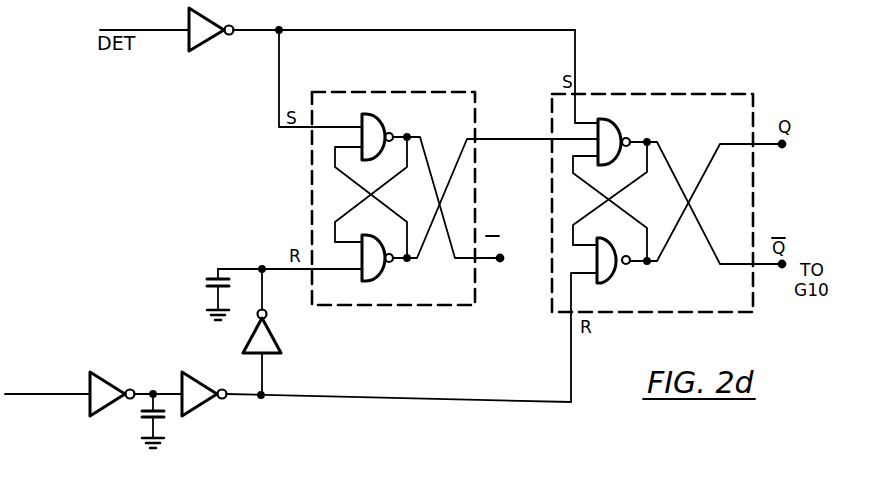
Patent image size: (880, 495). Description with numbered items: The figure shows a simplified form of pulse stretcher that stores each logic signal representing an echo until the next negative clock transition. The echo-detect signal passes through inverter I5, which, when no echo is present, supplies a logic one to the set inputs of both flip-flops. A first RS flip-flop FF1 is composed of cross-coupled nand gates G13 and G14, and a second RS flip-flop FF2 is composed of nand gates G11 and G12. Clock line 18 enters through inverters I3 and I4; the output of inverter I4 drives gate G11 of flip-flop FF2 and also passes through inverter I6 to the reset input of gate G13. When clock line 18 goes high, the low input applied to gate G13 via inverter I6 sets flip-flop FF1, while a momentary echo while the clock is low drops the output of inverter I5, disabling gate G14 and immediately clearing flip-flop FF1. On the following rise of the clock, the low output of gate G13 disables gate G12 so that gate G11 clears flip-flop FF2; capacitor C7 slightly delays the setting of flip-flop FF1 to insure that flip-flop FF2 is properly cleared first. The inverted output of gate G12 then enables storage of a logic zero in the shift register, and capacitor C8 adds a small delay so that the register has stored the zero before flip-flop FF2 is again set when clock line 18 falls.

The clock line 18 is at (41, 393).
The inverter I3 is at (98, 378).
The inverter I4 is at (190, 378).
The inverter I5 is at (196, 42).
The inverter I6 is at (271, 339).
The capacitor C7 is at (218, 293).
The capacitor C8 is at (146, 421).
The first RS flip-flop FF1 is at (383, 92).
The second RS flip-flop FF2 is at (668, 94).
The nand gate G11 is at (603, 285).
The nand gate G12 is at (628, 136).
The nand gate G13 is at (374, 268).
The nand gate G14 is at (374, 128).